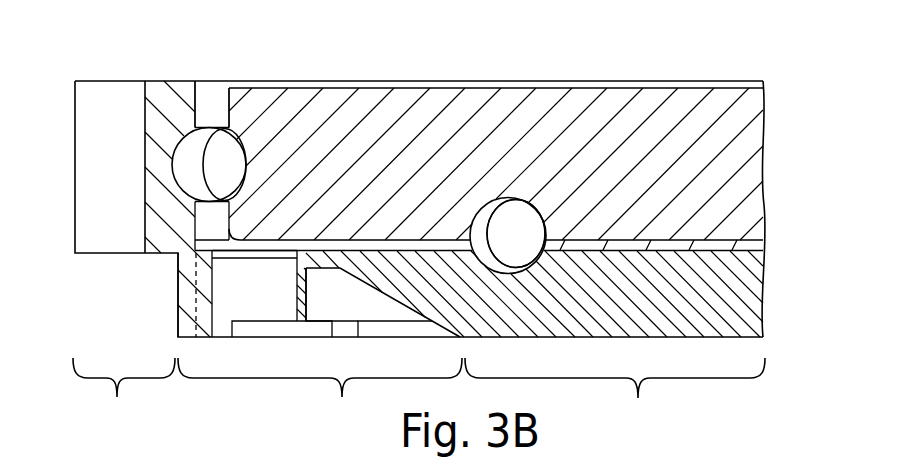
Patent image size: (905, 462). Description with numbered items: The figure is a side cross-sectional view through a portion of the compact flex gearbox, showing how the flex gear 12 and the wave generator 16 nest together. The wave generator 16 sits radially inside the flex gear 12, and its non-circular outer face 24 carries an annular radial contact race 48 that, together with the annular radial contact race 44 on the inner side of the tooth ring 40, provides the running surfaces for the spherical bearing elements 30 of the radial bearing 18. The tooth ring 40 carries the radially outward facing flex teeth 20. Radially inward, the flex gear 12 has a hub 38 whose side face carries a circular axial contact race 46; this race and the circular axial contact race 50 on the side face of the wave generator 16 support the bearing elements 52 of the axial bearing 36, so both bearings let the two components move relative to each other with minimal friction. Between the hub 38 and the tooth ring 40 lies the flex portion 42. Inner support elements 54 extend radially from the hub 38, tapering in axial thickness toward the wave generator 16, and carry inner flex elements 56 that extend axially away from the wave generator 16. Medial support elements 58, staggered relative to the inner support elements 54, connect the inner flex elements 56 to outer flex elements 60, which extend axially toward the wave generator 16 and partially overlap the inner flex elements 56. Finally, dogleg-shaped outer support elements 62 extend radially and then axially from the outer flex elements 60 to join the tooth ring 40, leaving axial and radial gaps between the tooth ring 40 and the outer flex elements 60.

The flex gear 12 is at (778, 285).
The wave generator 16 is at (778, 165).
The radial bearing 18 is at (211, 112).
The flex teeth 20 is at (112, 81).
The outer face 24 is at (229, 100).
The bearing elements 30 is at (210, 174).
The axial bearing 36 is at (525, 182).
The hub 38 is at (615, 392).
The tooth ring 40 is at (124, 392).
The flex portion 42 is at (320, 392).
The radial contact race 44 is at (184, 137).
The axial contact race 46 is at (474, 212).
The radial contact race 48 is at (232, 127).
The axial contact race 50 is at (537, 267).
The bearing elements 52 is at (502, 247).
The inner support elements 54 is at (393, 297).
The inner flex elements 56 is at (297, 288).
The medial support elements 58 is at (300, 338).
The outer flex elements 60 is at (203, 338).
The outer support elements 62 is at (178, 317).